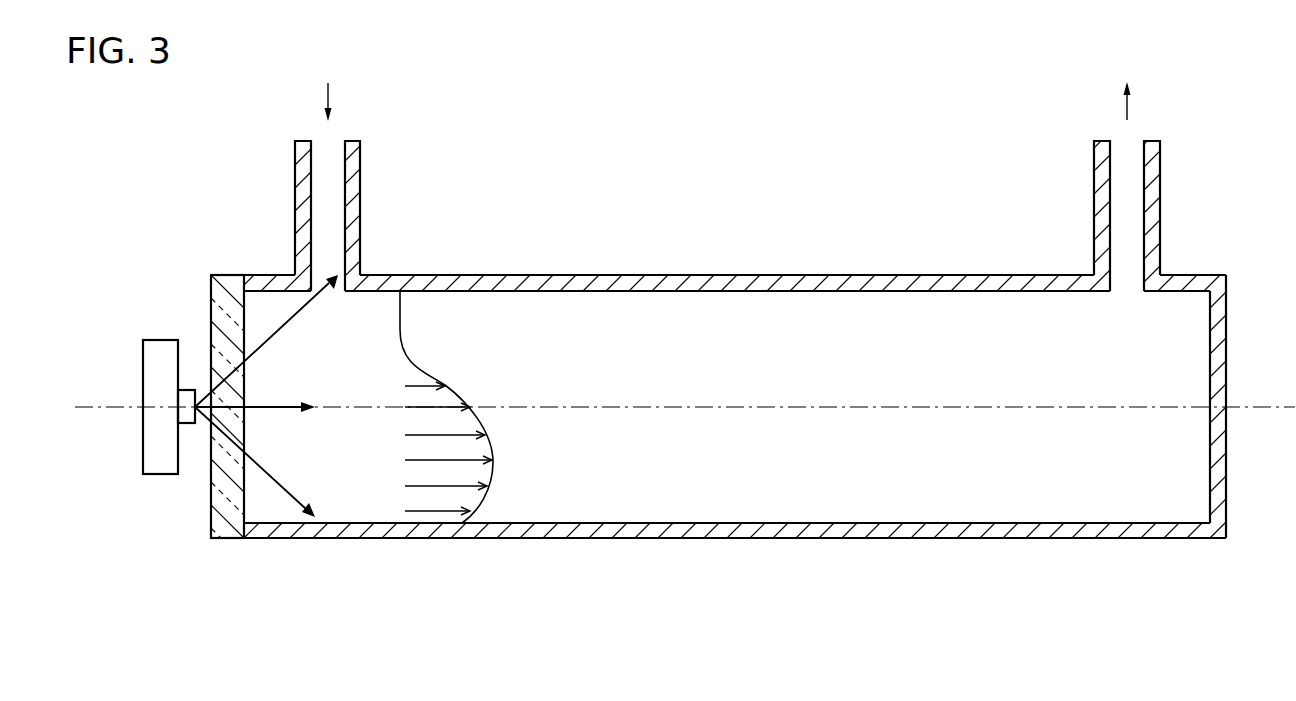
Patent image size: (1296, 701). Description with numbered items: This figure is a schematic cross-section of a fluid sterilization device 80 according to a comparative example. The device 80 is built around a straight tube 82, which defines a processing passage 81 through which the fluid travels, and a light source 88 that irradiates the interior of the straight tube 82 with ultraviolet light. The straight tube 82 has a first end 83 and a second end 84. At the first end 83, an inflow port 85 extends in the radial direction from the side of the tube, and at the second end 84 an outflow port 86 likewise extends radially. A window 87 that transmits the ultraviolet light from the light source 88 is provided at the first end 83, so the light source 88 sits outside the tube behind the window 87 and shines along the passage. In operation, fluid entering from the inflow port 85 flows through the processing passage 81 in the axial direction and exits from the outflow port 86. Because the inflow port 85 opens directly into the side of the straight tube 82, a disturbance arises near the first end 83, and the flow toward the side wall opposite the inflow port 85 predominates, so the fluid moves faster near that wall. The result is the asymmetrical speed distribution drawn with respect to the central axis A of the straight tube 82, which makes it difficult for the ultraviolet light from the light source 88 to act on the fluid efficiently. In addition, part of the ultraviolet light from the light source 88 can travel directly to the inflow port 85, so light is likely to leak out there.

The fluid sterilization device 80 is at (726, 643).
The processing passage 81 is at (779, 313).
The straight tube 82 is at (667, 273).
The first end 83 is at (272, 528).
The second end 84 is at (1205, 528).
The inflow port 85 is at (354, 204).
The outflow port 86 is at (1152, 210).
The window 87 is at (228, 283).
The light source 88 is at (157, 312).
The central axis A is at (1278, 398).